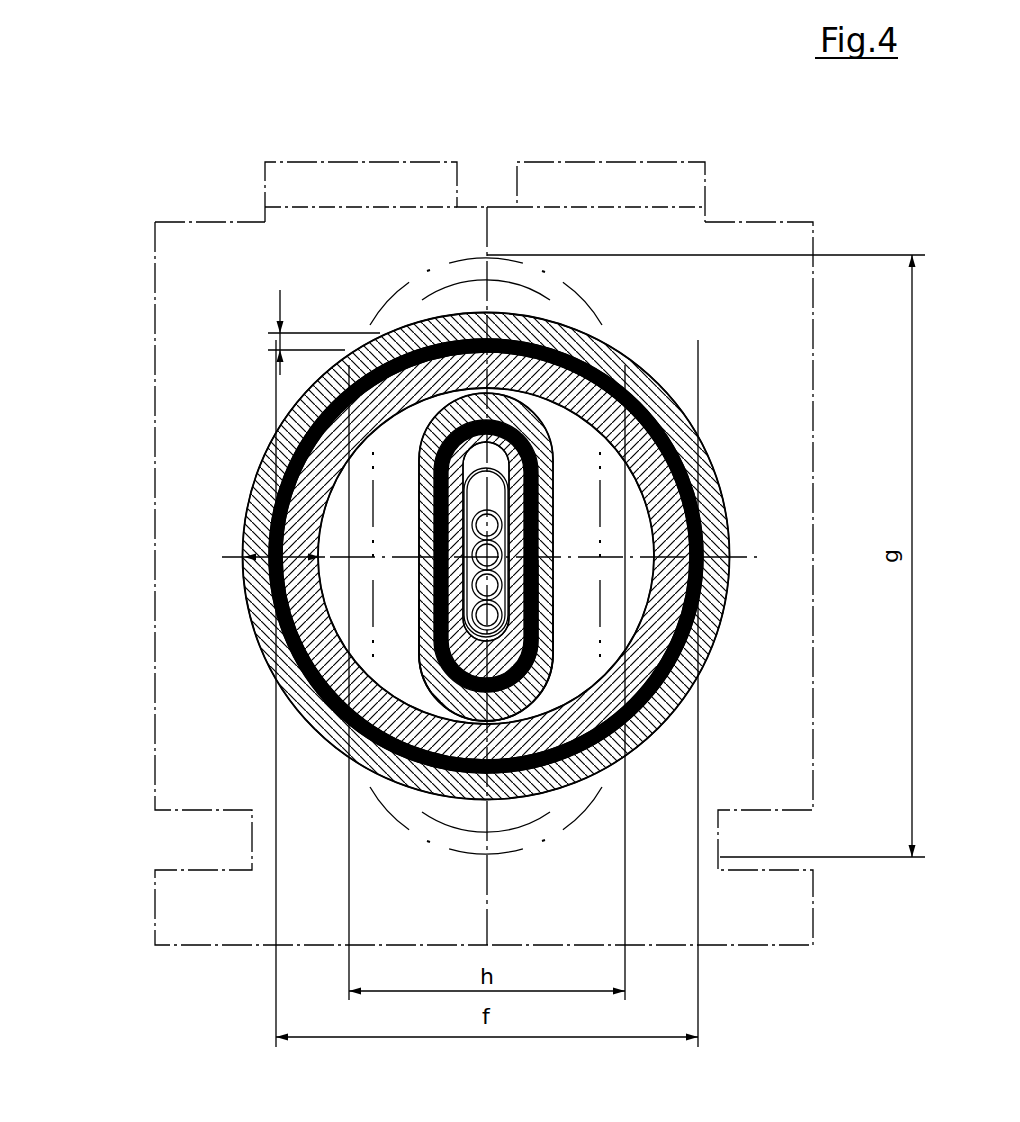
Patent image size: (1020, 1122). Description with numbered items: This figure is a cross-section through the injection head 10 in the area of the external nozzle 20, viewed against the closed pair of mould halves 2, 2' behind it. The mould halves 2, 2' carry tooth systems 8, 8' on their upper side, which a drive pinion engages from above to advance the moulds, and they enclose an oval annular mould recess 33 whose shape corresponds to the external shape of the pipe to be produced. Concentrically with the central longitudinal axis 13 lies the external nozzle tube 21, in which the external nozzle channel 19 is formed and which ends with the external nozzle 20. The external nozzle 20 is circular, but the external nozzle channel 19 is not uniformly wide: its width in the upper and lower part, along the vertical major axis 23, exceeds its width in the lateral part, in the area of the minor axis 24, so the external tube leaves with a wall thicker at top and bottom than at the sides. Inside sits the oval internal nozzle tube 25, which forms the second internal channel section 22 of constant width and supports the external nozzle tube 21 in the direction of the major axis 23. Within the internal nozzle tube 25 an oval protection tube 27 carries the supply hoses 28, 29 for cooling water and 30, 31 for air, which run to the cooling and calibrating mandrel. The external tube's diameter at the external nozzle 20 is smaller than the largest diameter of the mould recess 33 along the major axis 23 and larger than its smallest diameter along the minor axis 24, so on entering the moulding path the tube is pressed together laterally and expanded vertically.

The mould half 2 is at (285, 563).
The mould half 2' is at (681, 563).
The tooth system 8 is at (359, 149).
The tooth system 8' is at (629, 149).
The injection head 10 is at (637, 337).
The central longitudinal axis 13 is at (422, 607).
The external nozzle channel 19 is at (655, 397).
The external nozzle 20 is at (673, 398).
The external nozzle tube 21 is at (282, 442).
The second internal channel section 22 is at (440, 523).
The major axis 23 is at (487, 237).
The minor axis 24 is at (752, 557).
The internal nozzle tube 25 is at (553, 618).
The protection tube 27 is at (553, 473).
The supply hose 28 is at (550, 507).
The supply hose 29 is at (422, 573).
The supply hose 30 is at (423, 630).
The supply hose 31 is at (553, 641).
The mould recess 33 is at (408, 295).